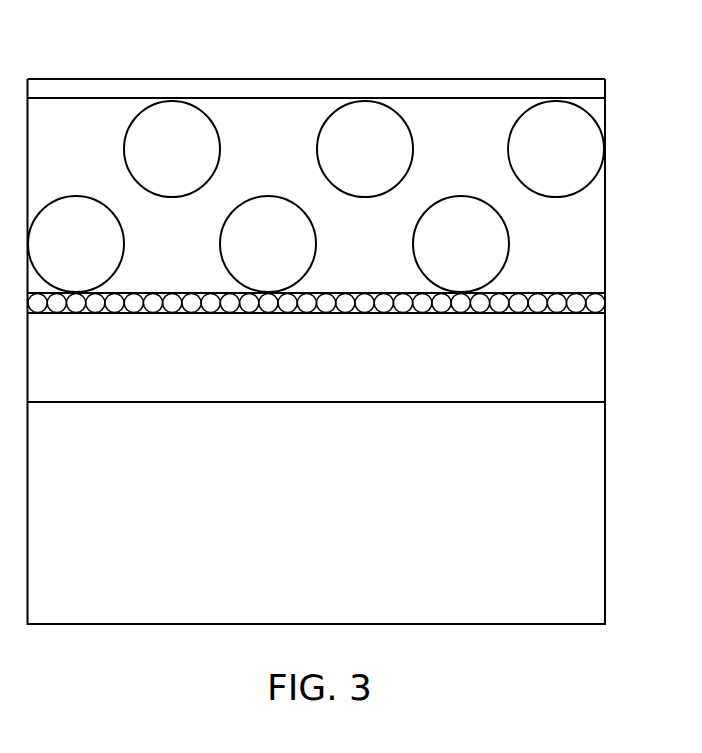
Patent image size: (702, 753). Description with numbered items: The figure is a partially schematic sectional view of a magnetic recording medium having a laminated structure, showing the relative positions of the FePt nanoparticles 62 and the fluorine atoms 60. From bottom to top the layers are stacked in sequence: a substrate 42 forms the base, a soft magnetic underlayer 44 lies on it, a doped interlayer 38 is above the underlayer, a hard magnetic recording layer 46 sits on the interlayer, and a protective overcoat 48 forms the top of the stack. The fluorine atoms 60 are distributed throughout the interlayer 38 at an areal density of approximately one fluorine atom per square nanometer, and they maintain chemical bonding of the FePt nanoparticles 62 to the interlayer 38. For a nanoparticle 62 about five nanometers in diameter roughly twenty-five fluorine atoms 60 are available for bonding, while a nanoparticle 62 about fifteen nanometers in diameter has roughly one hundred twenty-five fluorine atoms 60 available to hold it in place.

The protective overcoat 48 is at (596, 82).
The FePt nanoparticles 62 is at (586, 155).
The hard magnetic recording layer 46 is at (590, 222).
The doped interlayer 38 is at (590, 292).
The fluorine atoms 60 is at (596, 306).
The soft magnetic underlayer 44 is at (590, 365).
The substrate 42 is at (583, 475).